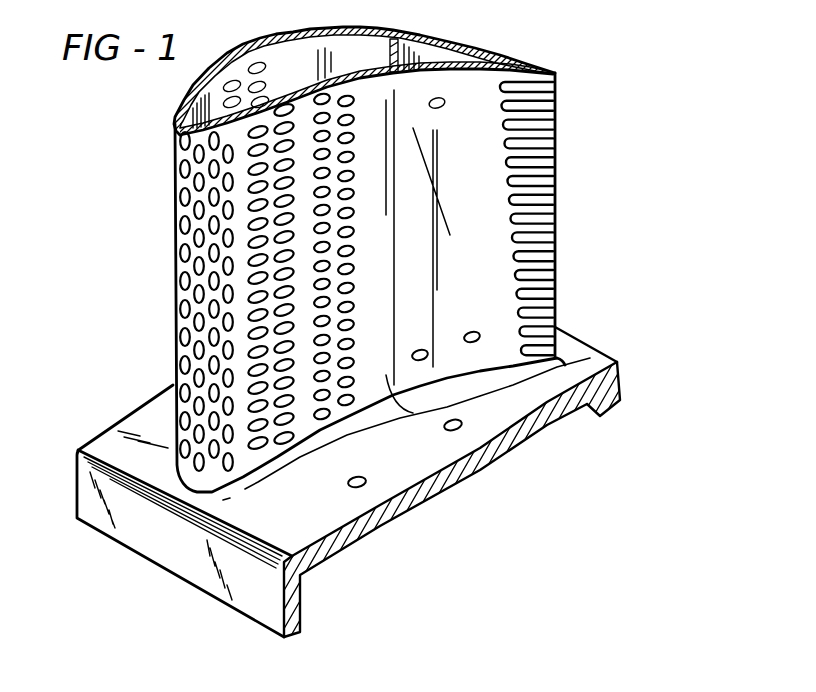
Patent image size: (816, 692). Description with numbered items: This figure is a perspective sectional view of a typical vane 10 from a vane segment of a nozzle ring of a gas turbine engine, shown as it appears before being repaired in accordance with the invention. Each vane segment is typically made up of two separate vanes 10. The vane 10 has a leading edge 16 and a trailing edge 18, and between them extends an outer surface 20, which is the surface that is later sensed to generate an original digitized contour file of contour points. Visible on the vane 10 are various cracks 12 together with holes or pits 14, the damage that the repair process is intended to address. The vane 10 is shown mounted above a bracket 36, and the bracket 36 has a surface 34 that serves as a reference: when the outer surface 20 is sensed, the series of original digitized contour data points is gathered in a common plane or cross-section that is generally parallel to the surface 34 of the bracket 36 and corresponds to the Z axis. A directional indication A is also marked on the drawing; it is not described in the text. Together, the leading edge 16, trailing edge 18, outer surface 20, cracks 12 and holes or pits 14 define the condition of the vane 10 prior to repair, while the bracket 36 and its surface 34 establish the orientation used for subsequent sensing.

The vane 10 is at (174, 230).
The cracks 12 is at (437, 193).
The holes or pits 14 is at (435, 347).
The leading edge 16 is at (173, 118).
The trailing edge 18 is at (558, 73).
The outer surface 20 is at (176, 166).
The surface 34 is at (582, 357).
The bracket 36 is at (622, 383).
The viewing direction arrow A is at (303, 0).